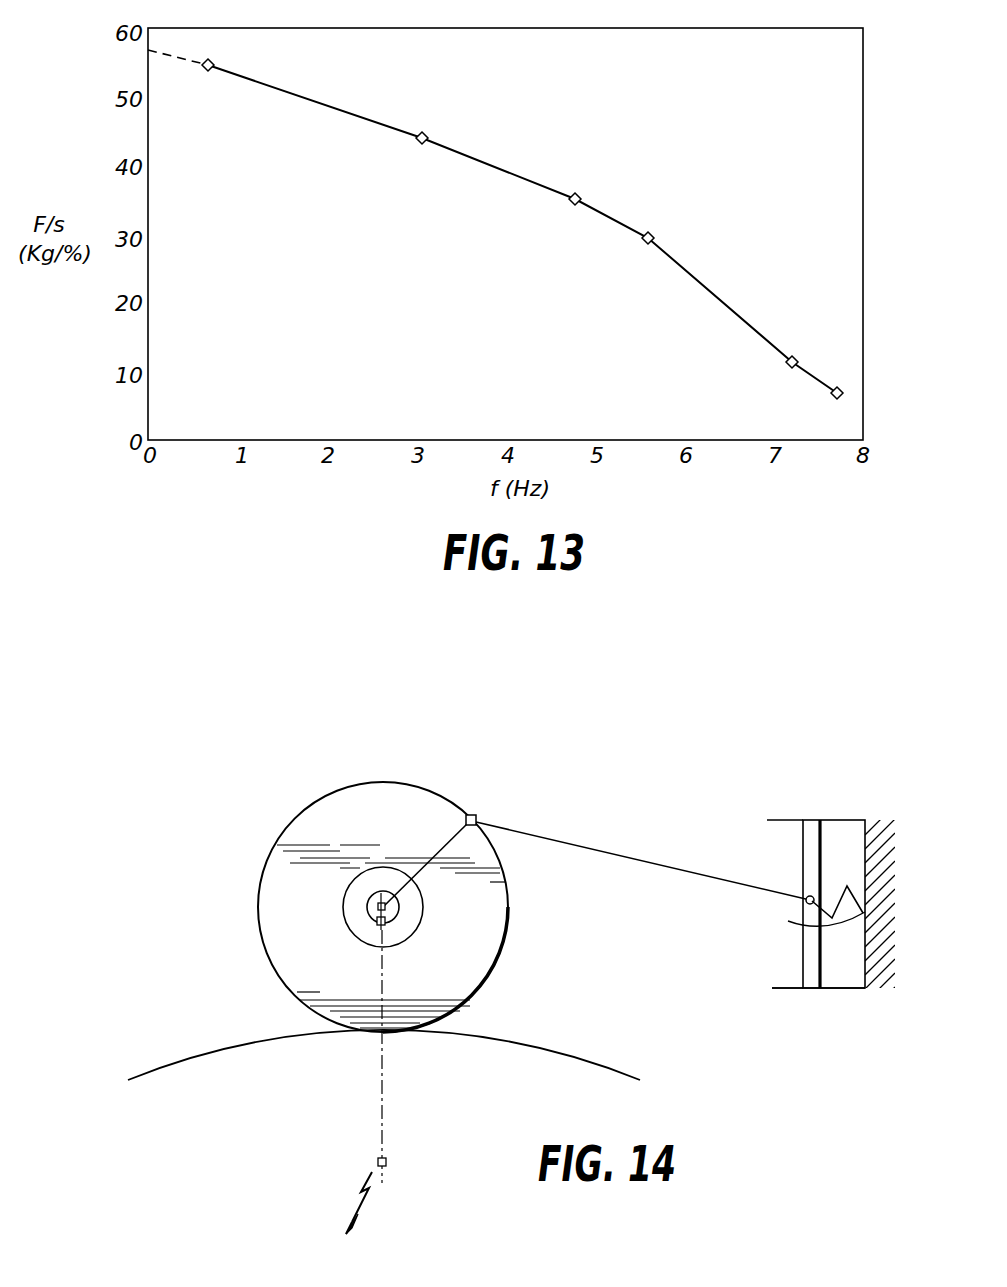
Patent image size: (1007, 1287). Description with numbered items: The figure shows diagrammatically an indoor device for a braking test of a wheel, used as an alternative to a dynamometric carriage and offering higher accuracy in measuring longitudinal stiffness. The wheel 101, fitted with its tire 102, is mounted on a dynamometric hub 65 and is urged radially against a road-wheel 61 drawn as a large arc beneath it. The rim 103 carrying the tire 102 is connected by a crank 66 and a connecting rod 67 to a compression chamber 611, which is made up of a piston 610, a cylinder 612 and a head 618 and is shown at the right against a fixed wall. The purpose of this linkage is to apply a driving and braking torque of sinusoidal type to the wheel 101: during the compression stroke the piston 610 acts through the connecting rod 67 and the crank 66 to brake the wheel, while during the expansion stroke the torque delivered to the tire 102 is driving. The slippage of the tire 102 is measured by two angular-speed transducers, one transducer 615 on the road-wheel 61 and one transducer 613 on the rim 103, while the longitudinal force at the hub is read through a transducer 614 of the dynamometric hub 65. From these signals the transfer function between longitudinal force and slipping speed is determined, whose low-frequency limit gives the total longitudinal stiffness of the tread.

The road-wheel 61 is at (536, 1025).
The dynamometric hub 65 is at (399, 907).
The crank 66 is at (442, 851).
The connecting rod 67 is at (597, 852).
The wheel 101 is at (496, 978).
The tire 102 is at (262, 942).
The rim 103 is at (410, 937).
The piston 610 is at (812, 843).
The compression chamber 611 is at (840, 850).
The cylinder 612 is at (831, 988).
The angular-speed transducer 613 is at (368, 905).
The transducer 614 is at (380, 922).
The angular-speed transducer 615 is at (392, 1163).
The head 618 is at (808, 917).